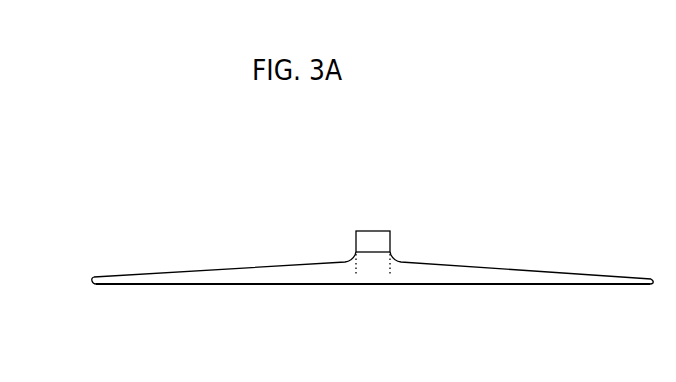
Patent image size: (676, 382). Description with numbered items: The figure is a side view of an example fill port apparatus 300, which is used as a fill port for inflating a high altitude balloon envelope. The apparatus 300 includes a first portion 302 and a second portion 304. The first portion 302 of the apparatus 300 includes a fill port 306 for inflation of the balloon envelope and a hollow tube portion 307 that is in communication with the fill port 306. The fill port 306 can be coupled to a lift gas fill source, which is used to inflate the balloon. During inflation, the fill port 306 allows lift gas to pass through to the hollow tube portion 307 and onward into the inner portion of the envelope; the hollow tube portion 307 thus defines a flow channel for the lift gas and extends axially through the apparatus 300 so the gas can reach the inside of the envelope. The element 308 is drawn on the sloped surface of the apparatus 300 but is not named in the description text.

The dome assembly 300 is at (526, 84).
The dome sheet 302 is at (355, 236).
The edge of dome sheet 304 is at (93, 278).
The protrusion block 306 is at (370, 231).
The hidden base of protrusion 307 is at (377, 271).
The sloped top surface 308 is at (463, 274).